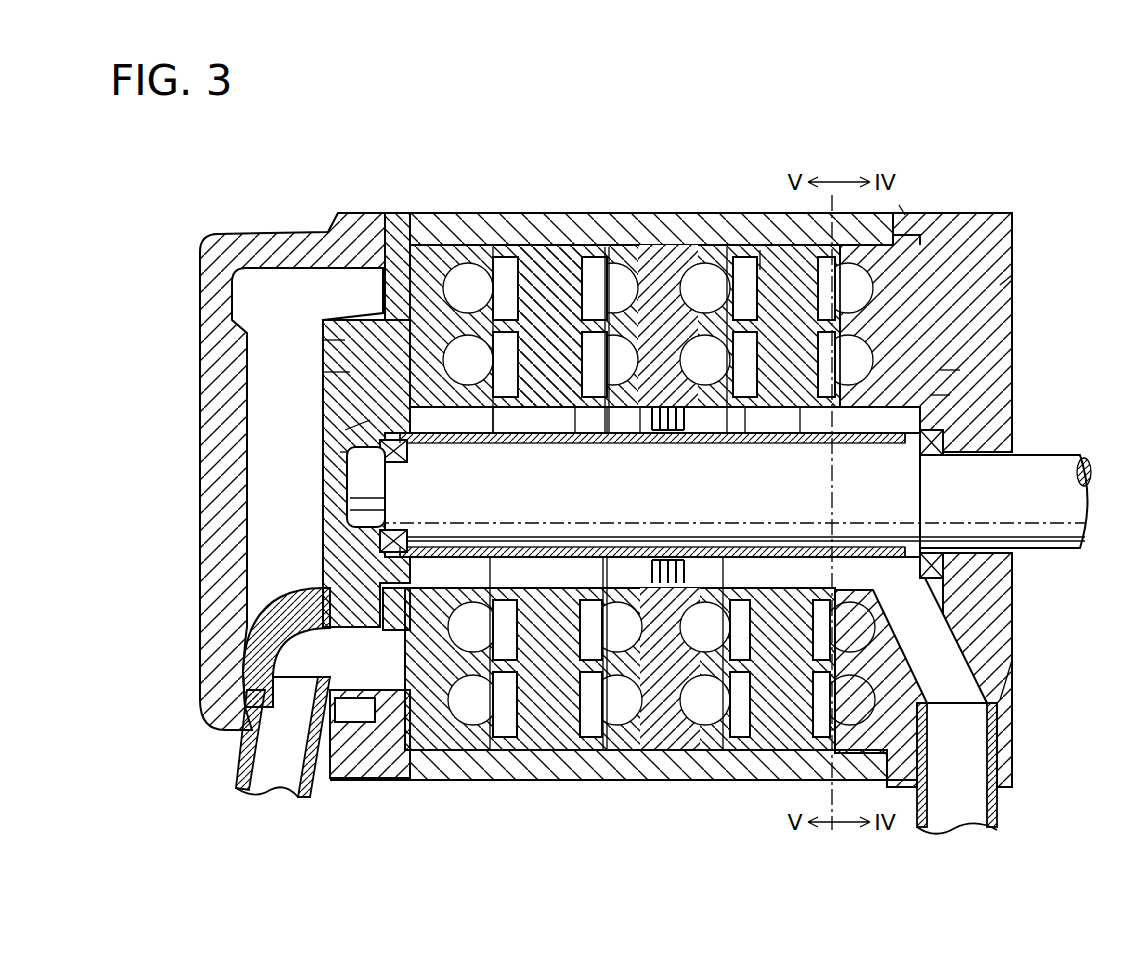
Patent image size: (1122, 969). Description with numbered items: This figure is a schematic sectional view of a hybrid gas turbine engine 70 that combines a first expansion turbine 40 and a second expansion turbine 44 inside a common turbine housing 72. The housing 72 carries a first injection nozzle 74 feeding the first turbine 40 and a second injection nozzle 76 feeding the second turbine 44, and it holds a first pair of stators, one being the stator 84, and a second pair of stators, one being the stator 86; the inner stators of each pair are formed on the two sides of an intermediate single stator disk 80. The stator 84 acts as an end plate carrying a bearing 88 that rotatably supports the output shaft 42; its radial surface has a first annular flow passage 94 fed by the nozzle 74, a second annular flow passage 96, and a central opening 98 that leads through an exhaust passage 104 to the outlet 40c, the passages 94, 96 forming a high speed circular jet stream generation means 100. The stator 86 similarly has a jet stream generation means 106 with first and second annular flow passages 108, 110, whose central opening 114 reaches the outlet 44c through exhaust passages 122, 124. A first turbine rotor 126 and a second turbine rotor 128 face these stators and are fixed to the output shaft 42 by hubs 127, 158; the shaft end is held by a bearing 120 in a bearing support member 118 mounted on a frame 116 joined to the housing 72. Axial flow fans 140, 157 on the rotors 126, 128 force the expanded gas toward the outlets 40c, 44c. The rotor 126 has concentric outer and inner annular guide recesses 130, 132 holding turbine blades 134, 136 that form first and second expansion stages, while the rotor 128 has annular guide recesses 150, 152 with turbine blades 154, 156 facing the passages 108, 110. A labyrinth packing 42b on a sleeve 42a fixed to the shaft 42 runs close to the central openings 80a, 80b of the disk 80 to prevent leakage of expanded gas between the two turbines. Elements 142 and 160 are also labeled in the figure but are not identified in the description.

The frame 116 is at (218, 244).
The annular guide recess 150 is at (338, 240).
The turbine housing 72 is at (405, 245).
The turbine blades 154 is at (385, 262).
The bearing support member 118 is at (340, 400).
The turbine blades 156 is at (335, 348).
The annular guide recess 152 is at (340, 375).
The central opening 114 is at (345, 428).
The bearing 120 is at (345, 452).
The exhaust passage 122 is at (300, 600).
The outlet 44c is at (262, 792).
The exhaust passage 124 is at (348, 760).
The second annular flow passage 110 is at (420, 750).
The stator 86 is at (448, 262).
The stator 84 is at (985, 245).
The first injection nozzle 74 is at (905, 215).
The hybrid gas turbine engine 70 is at (914, 196).
The second injection nozzle 76 is at (478, 270).
The high speed circular jet stream generation means 106 is at (485, 285).
The first annular flow passage 94 is at (875, 290).
The second turbine rotor 128 is at (548, 247).
The second expansion turbine 44 is at (585, 247).
The first turbine rotor 126 is at (822, 262).
The intermediate single stator disk 80 is at (665, 250).
The first expansion turbine 40 is at (762, 265).
The first annular flow passage 108 is at (478, 752).
The turbine blades 136 is at (875, 620).
The roller 142 is at (815, 700).
The high speed circular jet stream generation means 100 is at (890, 770).
The exhaust passage 104 is at (955, 650).
The inner annular guide recess 132 is at (880, 620).
The turbine blades 134 is at (965, 700).
The outer annular guide recess 130 is at (935, 712).
The outlet 40c is at (997, 820).
The second annular flow passage 96 is at (900, 358).
The central opening 98 is at (930, 400).
The bearing 88 is at (945, 432).
The sleeve 42a is at (700, 455).
The labyrinth packing 42b is at (668, 432).
The axial flow fan 157 is at (470, 438).
The hub 158 is at (500, 440).
The hub 127 is at (815, 435).
The shaft bore 160 is at (518, 515).
The output shaft 42 is at (1010, 470).
The central opening 80a is at (705, 515).
The central opening 80b is at (618, 515).
The axial flow fan 140 is at (800, 420).